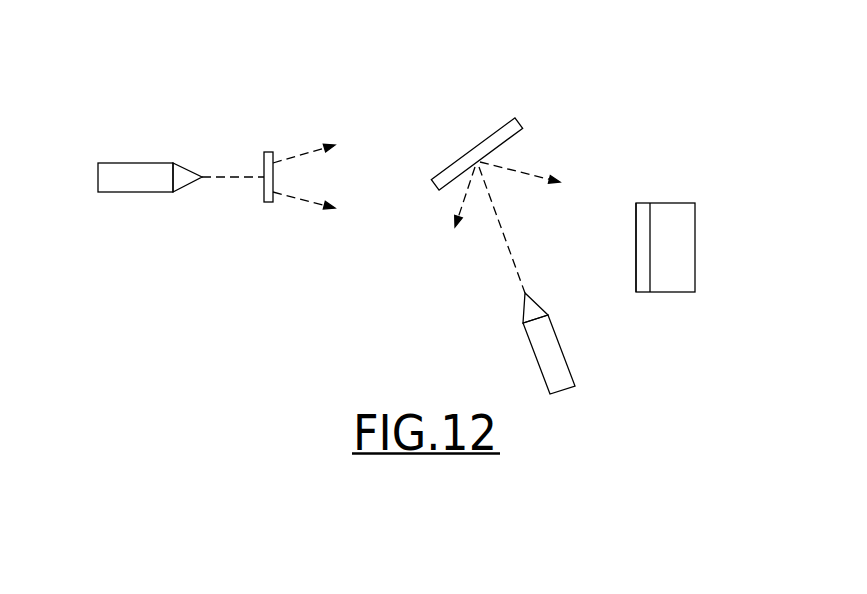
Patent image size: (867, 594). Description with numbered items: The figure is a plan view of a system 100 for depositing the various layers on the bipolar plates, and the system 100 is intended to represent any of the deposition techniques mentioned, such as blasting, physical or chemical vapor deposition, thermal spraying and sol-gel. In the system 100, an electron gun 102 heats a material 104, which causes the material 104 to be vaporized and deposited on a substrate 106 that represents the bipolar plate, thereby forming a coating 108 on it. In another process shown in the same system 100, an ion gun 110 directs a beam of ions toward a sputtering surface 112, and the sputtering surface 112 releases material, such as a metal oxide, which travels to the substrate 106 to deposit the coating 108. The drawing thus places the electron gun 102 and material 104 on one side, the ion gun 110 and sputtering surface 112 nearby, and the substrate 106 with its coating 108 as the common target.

The system 100 is at (322, 86).
The electron gun 102 is at (137, 167).
The material 104 is at (267, 203).
The substrate 106 is at (682, 247).
The coating 108 is at (640, 238).
The ion gun 110 is at (558, 357).
The sputtering surface 112 is at (472, 152).